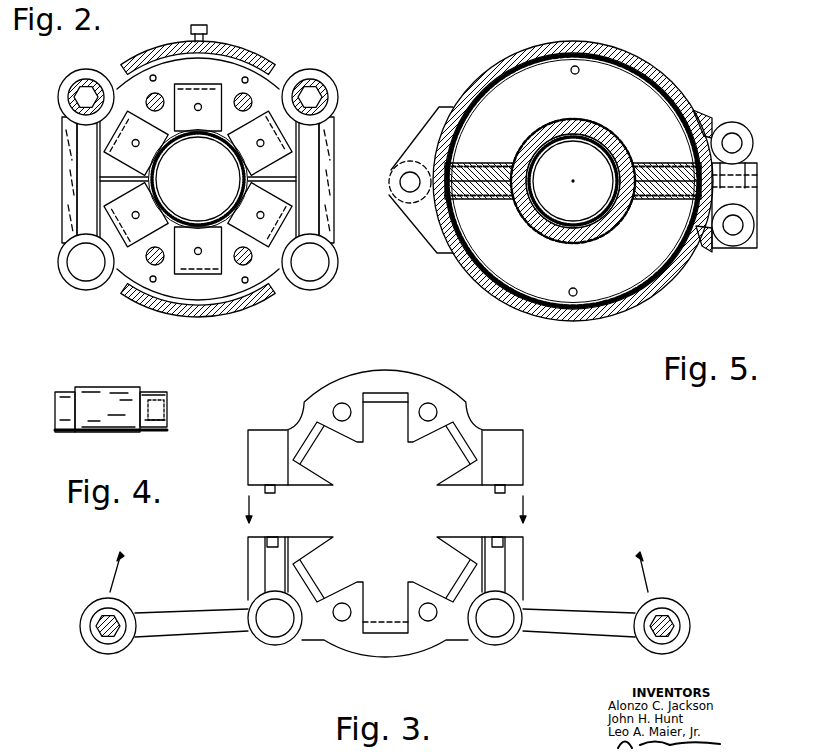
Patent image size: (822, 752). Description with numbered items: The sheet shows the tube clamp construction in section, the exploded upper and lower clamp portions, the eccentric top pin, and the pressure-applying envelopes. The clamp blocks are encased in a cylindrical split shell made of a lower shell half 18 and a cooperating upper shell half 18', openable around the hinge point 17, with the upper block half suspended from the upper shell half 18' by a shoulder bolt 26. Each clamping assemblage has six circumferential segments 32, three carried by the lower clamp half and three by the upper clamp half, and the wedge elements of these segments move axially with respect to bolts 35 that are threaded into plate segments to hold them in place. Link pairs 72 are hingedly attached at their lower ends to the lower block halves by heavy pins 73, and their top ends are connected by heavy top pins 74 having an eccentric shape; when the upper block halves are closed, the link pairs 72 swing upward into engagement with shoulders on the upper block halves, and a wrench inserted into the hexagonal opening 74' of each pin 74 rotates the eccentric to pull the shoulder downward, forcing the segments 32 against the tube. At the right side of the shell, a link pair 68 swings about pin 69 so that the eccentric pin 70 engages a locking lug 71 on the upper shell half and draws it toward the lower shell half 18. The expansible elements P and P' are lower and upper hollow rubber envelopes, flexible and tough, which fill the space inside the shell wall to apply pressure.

In FIG. 5, the hinge point 17 is at (405, 189).
In FIG. 2, the lower shell half 18 is at (198, 232).
In FIG. 5, the lower shell half 18 is at (573, 191).
In FIG. 2, the upper shell half 18' is at (198, 48).
In FIG. 5, the upper shell half 18' is at (573, 172).
In FIG. 2, the shoulder bolt 26 is at (206, 24).
In FIG. 2, the circumferential segment 32 is at (190, 97).
In FIG. 3, the circumferential segment 32 is at (432, 456).
In FIG. 2, the bolt 35 is at (198, 110).
In FIG. 5, the link pair 68 is at (733, 192).
In FIG. 5, the pin 69 is at (733, 226).
In FIG. 5, the pin 70 is at (732, 143).
In FIG. 5, the locking lug 71 is at (753, 173).
In FIG. 2, the link pair 72 is at (86, 158).
In FIG. 3, the link pair 72 is at (208, 612).
In FIG. 2, the heavy pin 73 is at (85, 268).
In FIG. 3, the heavy pin 73 is at (275, 626).
In FIG. 2, the heavy top pin 74 is at (201, 93).
In FIG. 3, the heavy top pin 74 is at (382, 603).
In FIG. 4, the heavy top pin 74 is at (111, 393).
In FIG. 4, the hexagonal opening 74' is at (176, 409).
In FIG. 5, the lower expansible element P is at (570, 230).
In FIG. 5, the upper expansible element P' is at (573, 117).